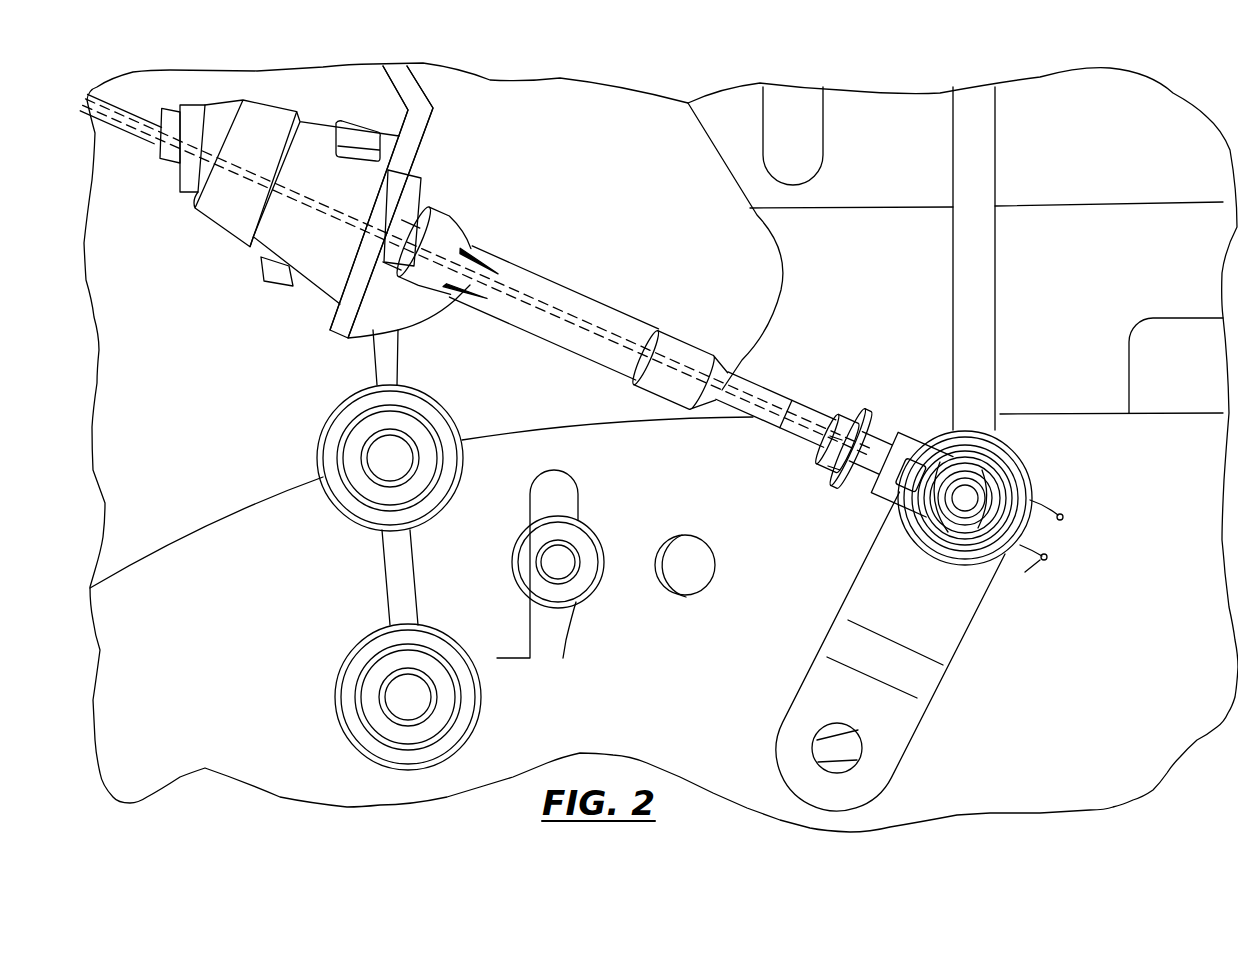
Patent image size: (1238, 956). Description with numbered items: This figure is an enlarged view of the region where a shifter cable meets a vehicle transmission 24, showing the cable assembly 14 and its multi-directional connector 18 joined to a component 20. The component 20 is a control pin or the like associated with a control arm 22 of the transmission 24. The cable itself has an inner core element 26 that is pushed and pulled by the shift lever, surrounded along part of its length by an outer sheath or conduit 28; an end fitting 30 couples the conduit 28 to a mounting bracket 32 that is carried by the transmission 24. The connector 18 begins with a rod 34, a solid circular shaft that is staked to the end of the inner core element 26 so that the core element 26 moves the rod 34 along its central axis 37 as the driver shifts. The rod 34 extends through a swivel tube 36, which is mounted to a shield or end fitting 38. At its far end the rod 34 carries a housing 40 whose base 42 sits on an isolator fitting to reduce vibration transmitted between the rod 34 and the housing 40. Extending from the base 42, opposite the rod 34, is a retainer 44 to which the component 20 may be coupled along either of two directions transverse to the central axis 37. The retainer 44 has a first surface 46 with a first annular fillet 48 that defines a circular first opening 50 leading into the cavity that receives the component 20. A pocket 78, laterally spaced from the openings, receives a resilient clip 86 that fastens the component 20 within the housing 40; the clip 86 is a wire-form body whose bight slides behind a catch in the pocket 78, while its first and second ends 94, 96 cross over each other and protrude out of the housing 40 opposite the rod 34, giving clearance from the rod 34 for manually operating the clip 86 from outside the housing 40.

The cable assembly 14 is at (513, 291).
The multi-directional connector 18 is at (810, 407).
The component 20 is at (1007, 486).
The control arm 22 is at (890, 745).
The vehicle transmission 24 is at (860, 128).
The inner core element 26 is at (250, 177).
The outer sheath or conduit 28 is at (147, 130).
The end fitting 30 is at (367, 135).
The mounting bracket 32 is at (427, 152).
The rod 34 is at (768, 423).
The swivel tube 36 is at (574, 298).
The central axis 37 is at (800, 428).
The end fitting 38 is at (513, 262).
The housing 40 is at (897, 398).
The base 42 is at (855, 407).
The retainer 44 is at (1023, 463).
The first surface 46 is at (1010, 487).
The first annular fillet 48 is at (993, 480).
The first opening 50 is at (952, 477).
The pocket 78 is at (908, 458).
The resilient clip 86 is at (1023, 566).
The first end 94 is at (1063, 517).
The second end 96 is at (1047, 556).